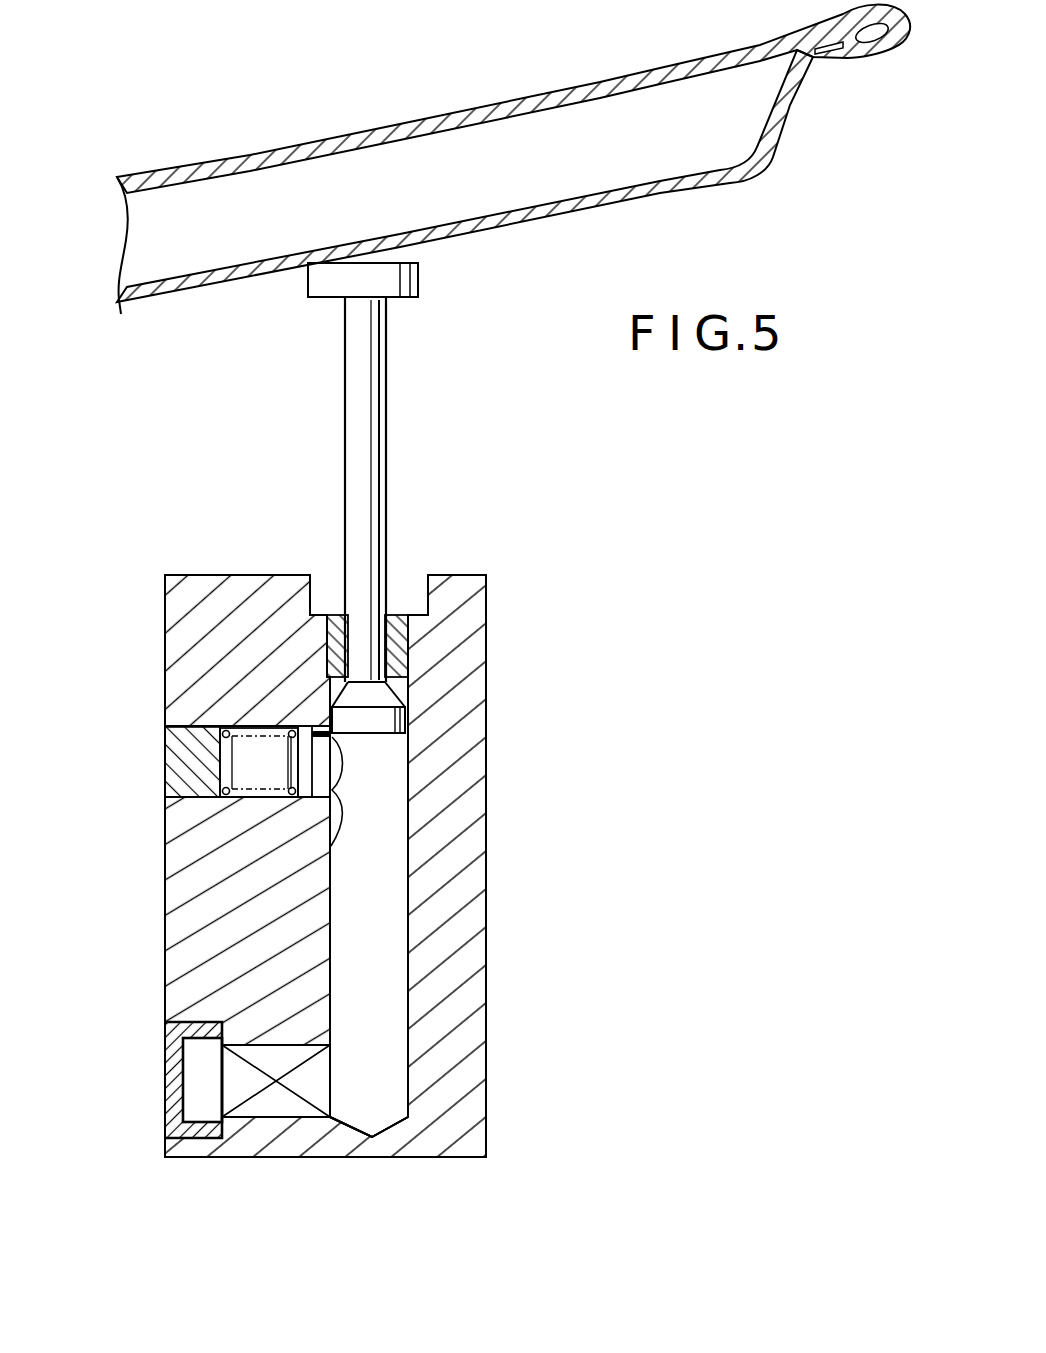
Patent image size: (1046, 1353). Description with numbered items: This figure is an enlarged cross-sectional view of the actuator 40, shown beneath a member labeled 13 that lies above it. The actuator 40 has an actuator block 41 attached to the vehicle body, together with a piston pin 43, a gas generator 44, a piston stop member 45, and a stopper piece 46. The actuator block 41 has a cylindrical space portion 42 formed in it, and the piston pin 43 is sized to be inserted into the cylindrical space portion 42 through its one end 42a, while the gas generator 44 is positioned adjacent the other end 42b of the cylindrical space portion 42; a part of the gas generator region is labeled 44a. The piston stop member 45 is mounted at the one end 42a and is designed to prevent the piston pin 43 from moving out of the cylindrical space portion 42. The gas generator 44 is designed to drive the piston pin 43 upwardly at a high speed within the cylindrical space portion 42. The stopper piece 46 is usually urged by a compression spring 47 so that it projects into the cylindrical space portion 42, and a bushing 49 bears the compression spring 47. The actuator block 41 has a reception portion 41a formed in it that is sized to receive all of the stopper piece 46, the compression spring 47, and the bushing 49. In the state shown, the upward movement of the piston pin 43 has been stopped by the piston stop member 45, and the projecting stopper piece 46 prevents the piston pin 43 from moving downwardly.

The brake pedal 13 is at (357, 122).
The actuator 40 is at (359, 766).
The actuator block 41 is at (487, 880).
The reception portion 41a is at (222, 770).
The cylindrical space portion 42 is at (410, 935).
The one end of the cylindrical space portion 42a is at (400, 683).
The another end of the cylindrical space portion 42b is at (370, 1076).
The piston pin 43 is at (402, 479).
The gas generator 44 is at (282, 1100).
The plug 44a is at (173, 1083).
The piston stop member 45 is at (397, 613).
The stopper piece 46 is at (335, 828).
The compression spring 47 is at (258, 728).
The bushing 49 is at (183, 737).